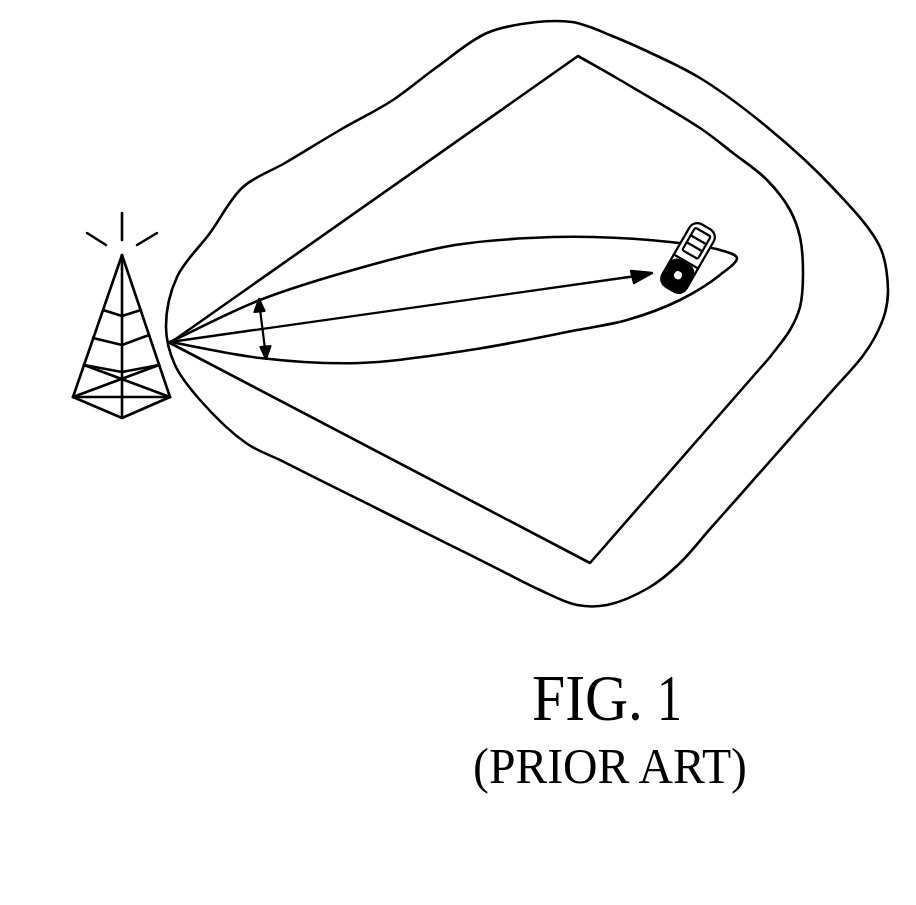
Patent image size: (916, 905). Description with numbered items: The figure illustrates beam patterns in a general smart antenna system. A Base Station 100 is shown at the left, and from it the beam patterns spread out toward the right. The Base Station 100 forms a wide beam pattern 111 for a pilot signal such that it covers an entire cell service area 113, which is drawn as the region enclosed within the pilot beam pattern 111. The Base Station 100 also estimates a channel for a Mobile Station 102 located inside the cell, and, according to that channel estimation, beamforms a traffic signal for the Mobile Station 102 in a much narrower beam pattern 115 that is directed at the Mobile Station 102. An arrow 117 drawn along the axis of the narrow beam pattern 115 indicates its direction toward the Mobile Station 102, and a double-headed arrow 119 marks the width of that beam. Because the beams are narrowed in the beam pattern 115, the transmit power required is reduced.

The Base Station 100 is at (121, 336).
The Mobile Station 102 is at (692, 278).
The beam pattern 111 is at (285, 163).
The cell service area 113 is at (422, 162).
The beam pattern 115 is at (452, 245).
The beam direction 117 is at (458, 301).
The beam width 119 is at (266, 341).